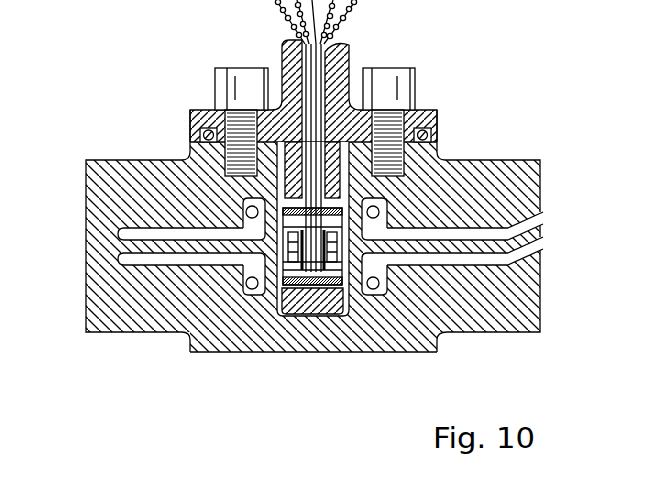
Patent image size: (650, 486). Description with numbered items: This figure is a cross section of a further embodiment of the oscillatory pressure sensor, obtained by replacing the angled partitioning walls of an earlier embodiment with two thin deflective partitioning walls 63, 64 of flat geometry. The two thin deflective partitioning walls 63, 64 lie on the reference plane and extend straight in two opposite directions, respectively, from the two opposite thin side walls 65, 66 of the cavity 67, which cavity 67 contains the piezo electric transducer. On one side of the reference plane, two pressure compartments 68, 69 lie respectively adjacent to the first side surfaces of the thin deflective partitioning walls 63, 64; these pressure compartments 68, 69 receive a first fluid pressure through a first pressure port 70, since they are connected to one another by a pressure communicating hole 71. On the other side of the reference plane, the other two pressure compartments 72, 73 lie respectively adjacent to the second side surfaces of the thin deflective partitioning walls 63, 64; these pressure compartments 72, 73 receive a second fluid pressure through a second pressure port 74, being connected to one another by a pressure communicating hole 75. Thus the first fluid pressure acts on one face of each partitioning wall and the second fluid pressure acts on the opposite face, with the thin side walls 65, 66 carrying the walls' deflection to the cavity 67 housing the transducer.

The thin deflective partitioning wall 63 is at (160, 160).
The thin deflective partitioning wall 64 is at (508, 162).
The thin side wall 65 is at (274, 282).
The thin side wall 66 is at (366, 296).
The cavity 67 is at (390, 202).
The pressure compartment 68 is at (138, 218).
The pressure compartment 69 is at (470, 237).
The first pressure port 70 is at (545, 215).
The pressure communicating hole 71 is at (180, 240).
The pressure compartment 72 is at (152, 258).
The pressure compartment 73 is at (467, 266).
The second pressure port 74 is at (545, 243).
The pressure communicating hole 75 is at (245, 283).